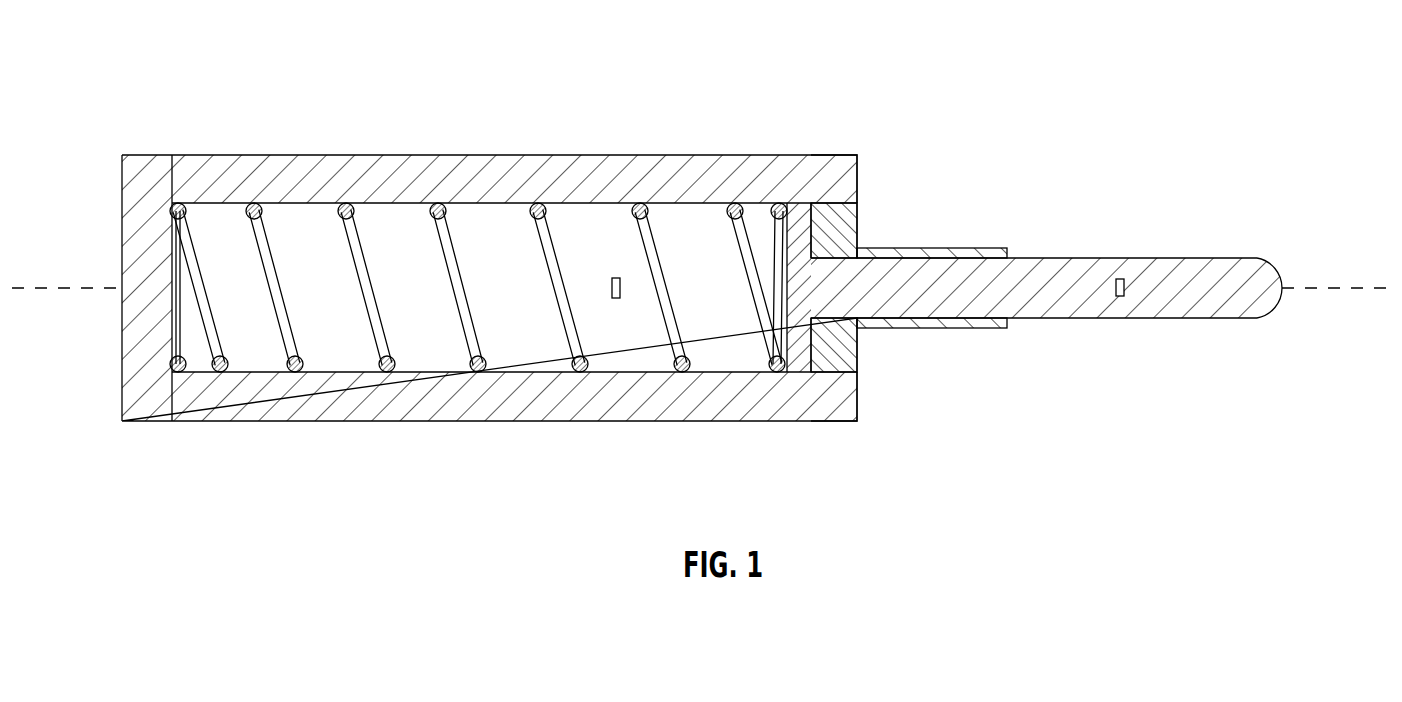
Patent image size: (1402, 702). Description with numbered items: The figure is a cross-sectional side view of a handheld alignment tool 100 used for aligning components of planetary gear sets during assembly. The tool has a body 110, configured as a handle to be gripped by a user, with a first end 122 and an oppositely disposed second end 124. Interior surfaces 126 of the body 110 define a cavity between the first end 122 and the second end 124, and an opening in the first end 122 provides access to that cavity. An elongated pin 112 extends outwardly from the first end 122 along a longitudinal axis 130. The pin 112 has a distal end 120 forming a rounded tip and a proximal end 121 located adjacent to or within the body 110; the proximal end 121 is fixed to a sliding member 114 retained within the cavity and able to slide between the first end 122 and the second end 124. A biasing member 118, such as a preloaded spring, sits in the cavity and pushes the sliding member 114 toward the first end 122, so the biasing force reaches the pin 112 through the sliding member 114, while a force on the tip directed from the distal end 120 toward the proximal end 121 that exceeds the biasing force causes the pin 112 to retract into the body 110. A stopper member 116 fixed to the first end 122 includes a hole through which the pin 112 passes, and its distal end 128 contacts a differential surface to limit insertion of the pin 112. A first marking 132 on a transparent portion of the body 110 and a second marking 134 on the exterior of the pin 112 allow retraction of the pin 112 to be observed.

The alignment tool 100 is at (181, 142).
The body 110 is at (287, 422).
The elongated pin 112 is at (1150, 257).
The sliding member 114 is at (797, 202).
The stopper member 116 is at (930, 248).
The biasing member 118 is at (365, 243).
The distal end 120 is at (1282, 293).
The proximal end 121 is at (837, 322).
The first end 122 is at (860, 182).
The second end 124 is at (122, 373).
The interior surfaces 126 is at (540, 355).
The distal end of stopper member 128 is at (1007, 322).
The longitudinal axis 130 is at (1342, 286).
The first marking 132 is at (610, 288).
The second marking 134 is at (1127, 288).